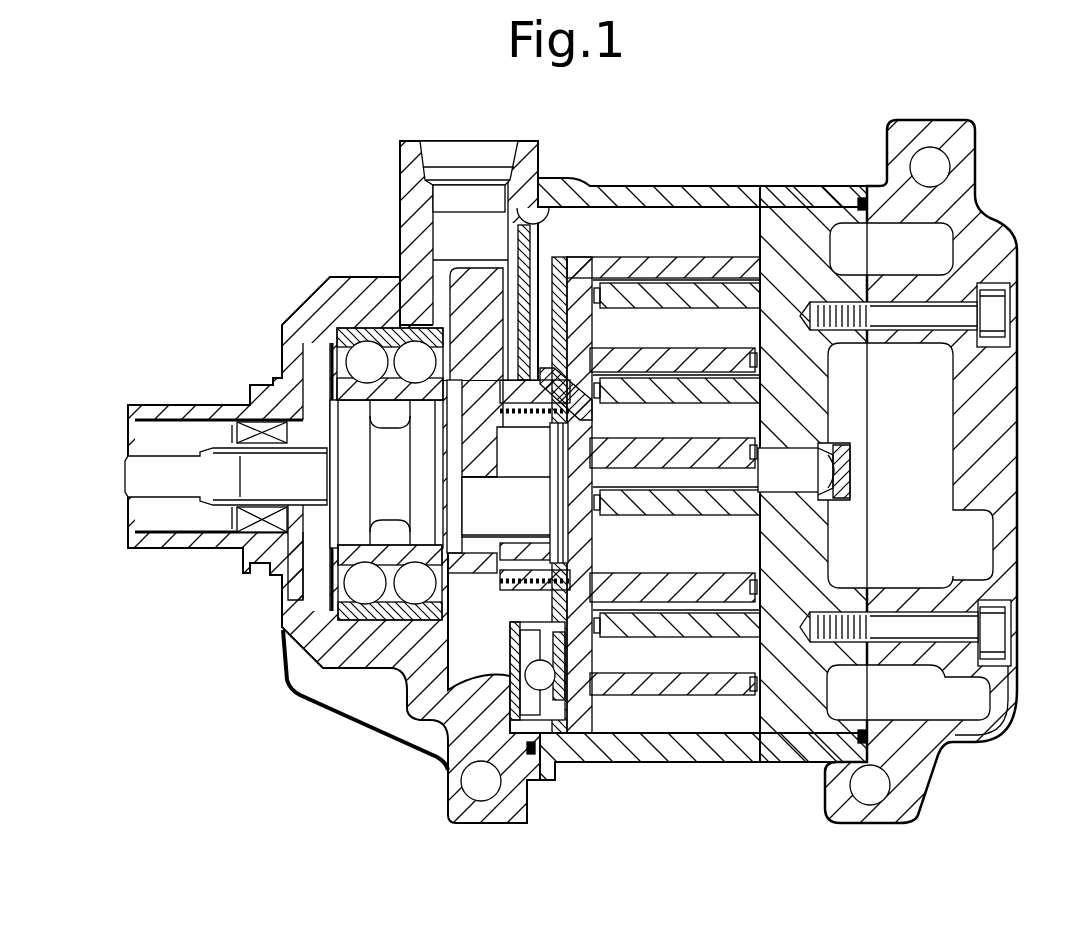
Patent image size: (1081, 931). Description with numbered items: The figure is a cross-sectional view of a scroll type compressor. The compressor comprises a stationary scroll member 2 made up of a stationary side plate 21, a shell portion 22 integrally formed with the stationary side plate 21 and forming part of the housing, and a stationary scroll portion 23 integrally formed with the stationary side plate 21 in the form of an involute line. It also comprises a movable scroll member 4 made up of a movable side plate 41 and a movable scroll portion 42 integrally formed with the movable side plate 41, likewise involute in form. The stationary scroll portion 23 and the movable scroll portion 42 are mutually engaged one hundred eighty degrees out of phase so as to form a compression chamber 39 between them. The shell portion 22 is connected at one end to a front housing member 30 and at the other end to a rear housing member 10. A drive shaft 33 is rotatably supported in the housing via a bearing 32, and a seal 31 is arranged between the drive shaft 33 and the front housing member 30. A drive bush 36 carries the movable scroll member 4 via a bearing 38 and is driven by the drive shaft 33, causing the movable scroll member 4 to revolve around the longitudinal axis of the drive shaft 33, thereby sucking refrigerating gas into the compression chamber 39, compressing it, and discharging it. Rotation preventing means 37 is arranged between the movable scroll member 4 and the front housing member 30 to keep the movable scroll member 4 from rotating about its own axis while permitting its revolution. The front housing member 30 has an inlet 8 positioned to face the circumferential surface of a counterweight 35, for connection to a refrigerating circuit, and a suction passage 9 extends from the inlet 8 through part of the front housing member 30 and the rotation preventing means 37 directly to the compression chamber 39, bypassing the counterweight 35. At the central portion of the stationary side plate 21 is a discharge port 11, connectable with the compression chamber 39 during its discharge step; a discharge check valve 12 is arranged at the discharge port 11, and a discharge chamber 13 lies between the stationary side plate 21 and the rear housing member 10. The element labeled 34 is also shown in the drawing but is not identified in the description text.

The stationary scroll member 2 is at (702, 492).
The stationary side plate 21 is at (797, 703).
The shell portion 22 is at (742, 195).
The stationary scroll portion 23 is at (697, 617).
The movable scroll member 4 is at (656, 421).
The movable side plate 41 is at (580, 302).
The movable scroll portion 42 is at (712, 272).
The inlet 8 is at (430, 167).
The suction passage 9 is at (541, 208).
The rear housing member 10 is at (933, 471).
The discharge port 11 is at (812, 462).
The discharge check valve 12 is at (850, 468).
The discharge chamber 13 is at (915, 552).
The front housing member 30 is at (353, 712).
The seal 31 is at (245, 520).
The bearing 32 is at (298, 672).
The drive shaft 33 is at (158, 472).
The crank 34 is at (475, 522).
The counterweight 35 is at (458, 286).
The drive bush 36 is at (566, 456).
The rotation preventing means 37 is at (392, 732).
The bearing 38 is at (580, 567).
The compression chamber 39 is at (733, 341).